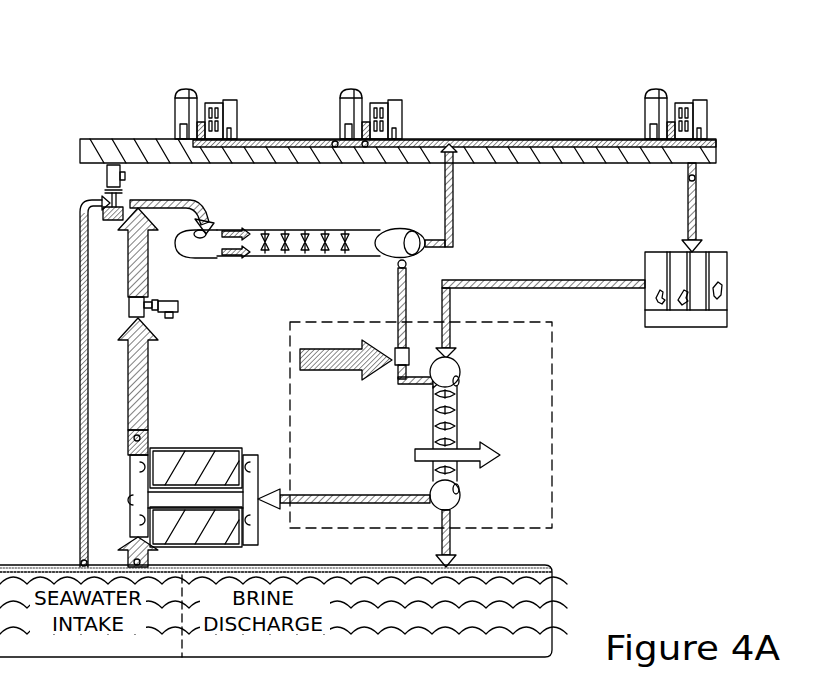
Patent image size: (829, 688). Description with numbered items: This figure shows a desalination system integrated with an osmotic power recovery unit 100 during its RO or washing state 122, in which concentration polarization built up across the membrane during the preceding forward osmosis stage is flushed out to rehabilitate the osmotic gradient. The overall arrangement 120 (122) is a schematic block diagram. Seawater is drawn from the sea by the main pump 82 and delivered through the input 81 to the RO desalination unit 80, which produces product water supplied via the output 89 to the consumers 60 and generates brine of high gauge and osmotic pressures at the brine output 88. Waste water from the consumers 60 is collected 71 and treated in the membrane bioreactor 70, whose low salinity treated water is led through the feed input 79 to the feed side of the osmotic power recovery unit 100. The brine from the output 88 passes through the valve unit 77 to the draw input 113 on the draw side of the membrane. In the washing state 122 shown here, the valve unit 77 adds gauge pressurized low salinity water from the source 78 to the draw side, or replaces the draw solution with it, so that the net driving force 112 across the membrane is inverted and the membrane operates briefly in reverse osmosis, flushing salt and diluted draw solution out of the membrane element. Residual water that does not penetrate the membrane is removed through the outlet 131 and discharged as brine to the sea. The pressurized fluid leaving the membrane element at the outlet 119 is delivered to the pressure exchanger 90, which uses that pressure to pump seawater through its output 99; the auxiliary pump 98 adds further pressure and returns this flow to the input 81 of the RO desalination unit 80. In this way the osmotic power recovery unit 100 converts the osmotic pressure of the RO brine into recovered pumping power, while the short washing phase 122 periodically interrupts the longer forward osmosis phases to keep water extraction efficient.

The water treatment system 120 is at (480, 52).
The RO or washing state 122 is at (521, 41).
The consumers 60 is at (390, 102).
The membrane bioreactor 70 is at (715, 252).
The waste water collection 71 is at (700, 180).
The valve unit 77 is at (397, 345).
The gauge pressurized low salinity water source 78 is at (340, 340).
The feed solution input 79 is at (538, 280).
The RO desalination unit 80 is at (335, 225).
The input 81 is at (168, 200).
The main pump 82 is at (105, 177).
The brine output 88 is at (408, 300).
The product water output 89 is at (458, 195).
The pressure exchanger 90 is at (188, 445).
The auxiliary pump 98 is at (128, 305).
The pressure exchanger output 99 is at (128, 398).
The osmotic power recovery unit 100 is at (553, 336).
The net driving force 112 is at (480, 470).
The draw solution input 113 is at (405, 388).
The outlet 119 is at (260, 480).
The outlet 131 is at (452, 546).